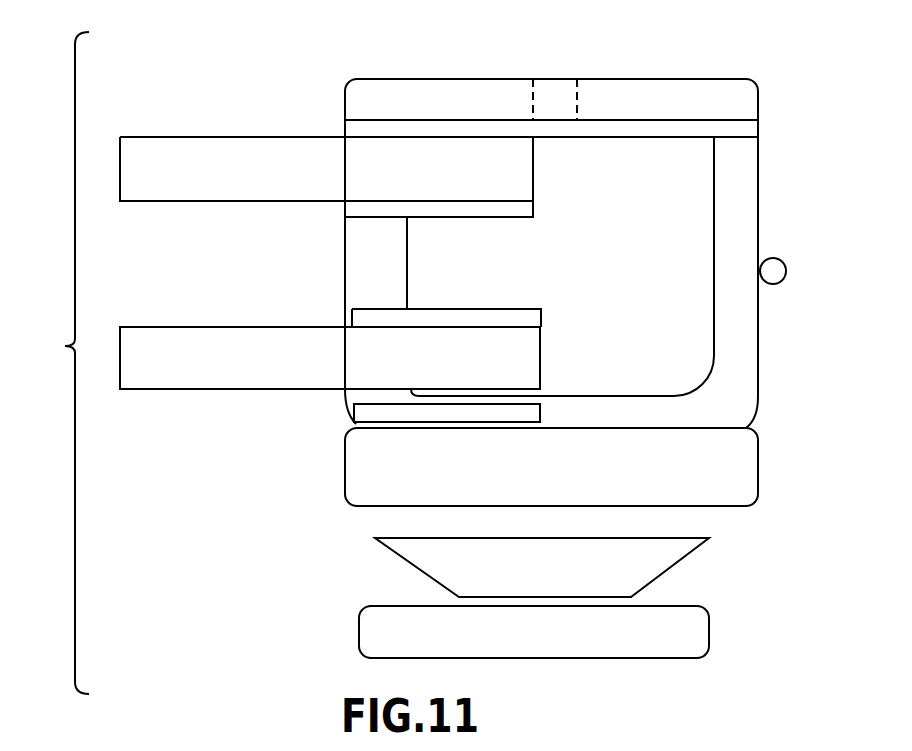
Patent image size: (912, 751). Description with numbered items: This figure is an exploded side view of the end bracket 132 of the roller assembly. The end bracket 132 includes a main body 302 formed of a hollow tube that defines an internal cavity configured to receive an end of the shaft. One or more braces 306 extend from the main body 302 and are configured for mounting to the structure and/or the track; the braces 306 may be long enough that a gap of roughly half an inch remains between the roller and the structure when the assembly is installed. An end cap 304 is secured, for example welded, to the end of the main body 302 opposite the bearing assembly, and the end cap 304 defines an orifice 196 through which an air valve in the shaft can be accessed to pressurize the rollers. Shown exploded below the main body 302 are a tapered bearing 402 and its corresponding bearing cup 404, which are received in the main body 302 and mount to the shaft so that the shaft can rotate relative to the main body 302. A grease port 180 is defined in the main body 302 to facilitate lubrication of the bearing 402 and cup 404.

The end bracket 132 is at (52, 363).
The end cap 304 is at (372, 89).
The orifice 196 is at (577, 100).
The braces 306 is at (178, 332).
The main body 302 is at (358, 267).
The grease port 180 is at (788, 270).
The tapered bearing 402 is at (672, 555).
The bearing cup 404 is at (710, 633).